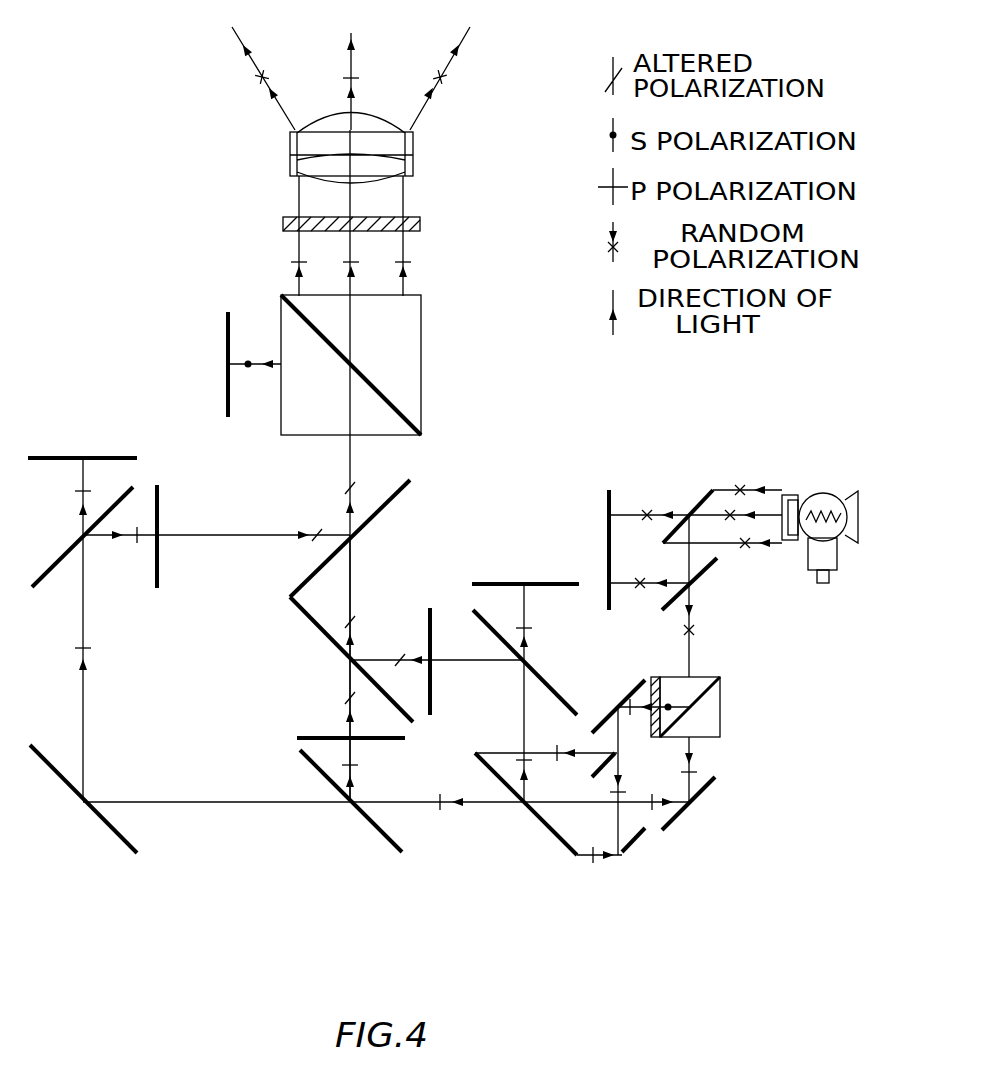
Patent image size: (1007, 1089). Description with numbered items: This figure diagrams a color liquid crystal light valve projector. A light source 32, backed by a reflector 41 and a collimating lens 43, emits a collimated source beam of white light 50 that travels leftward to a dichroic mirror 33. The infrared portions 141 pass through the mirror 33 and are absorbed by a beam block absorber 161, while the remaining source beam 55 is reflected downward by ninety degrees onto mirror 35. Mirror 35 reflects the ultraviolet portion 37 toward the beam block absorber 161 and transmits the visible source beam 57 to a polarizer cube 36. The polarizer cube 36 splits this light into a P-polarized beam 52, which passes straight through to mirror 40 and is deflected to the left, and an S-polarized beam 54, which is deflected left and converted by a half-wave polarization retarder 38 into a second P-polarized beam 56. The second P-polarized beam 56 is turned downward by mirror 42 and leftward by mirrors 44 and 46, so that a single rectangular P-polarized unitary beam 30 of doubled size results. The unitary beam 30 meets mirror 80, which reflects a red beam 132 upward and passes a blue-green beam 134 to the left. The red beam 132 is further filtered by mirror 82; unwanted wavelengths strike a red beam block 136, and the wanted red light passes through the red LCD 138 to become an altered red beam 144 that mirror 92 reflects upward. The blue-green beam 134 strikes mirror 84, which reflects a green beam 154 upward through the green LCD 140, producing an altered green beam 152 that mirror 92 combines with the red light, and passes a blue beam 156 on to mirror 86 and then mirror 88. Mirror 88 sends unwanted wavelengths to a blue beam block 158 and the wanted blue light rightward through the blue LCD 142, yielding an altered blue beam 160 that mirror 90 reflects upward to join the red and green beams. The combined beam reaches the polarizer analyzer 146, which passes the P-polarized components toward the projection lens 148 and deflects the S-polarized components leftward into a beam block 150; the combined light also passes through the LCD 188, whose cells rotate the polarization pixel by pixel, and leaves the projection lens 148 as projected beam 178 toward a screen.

The unitary polarized beam 30 is at (560, 730).
The light source 32 is at (830, 493).
The mirror 33 is at (697, 502).
The mirror 35 is at (700, 578).
The polarizer cube 36 is at (720, 707).
The ultraviolet portion of the source beam 37 is at (623, 583).
The half-wave polarization retarder 38 is at (656, 677).
The mirror 40 is at (700, 795).
The reflector 41 is at (868, 495).
The mirror 42 is at (625, 705).
The collimating lens 43 is at (808, 479).
The mirror 44 is at (633, 845).
The mirror 46 is at (596, 778).
The source beam of white light 50 is at (775, 490).
The P-polarized beam 52 is at (693, 748).
The S-polarized beam 54 is at (680, 706).
The source beam 55 is at (690, 548).
The second P-polarized beam 56 is at (638, 781).
The source beam 57 is at (690, 653).
The mirror 80 is at (545, 825).
The mirror 82 is at (535, 665).
The mirror 84 is at (385, 835).
The mirror 86 is at (105, 828).
The mirror 88 is at (50, 565).
The mirror 90 is at (393, 500).
The mirror 92 is at (290, 606).
The red beam 132 is at (523, 727).
The blue-green beam 134 is at (430, 805).
The red beam block 136 is at (545, 584).
The red LCD 138 is at (430, 606).
The green LCD 140 is at (305, 735).
The infrared portions of the source beam 141 is at (626, 517).
The blue LCD 142 is at (160, 572).
The altered red beam 144 is at (350, 453).
The polarizer analyzer 146 is at (422, 333).
The projection lens 148 is at (412, 147).
The beam block 150 is at (228, 384).
The altered green beam 152 is at (352, 567).
The green beam 154 is at (352, 752).
The blue beam 156 is at (203, 805).
The blue beam block 158 is at (62, 457).
The altered blue beam 160 is at (215, 535).
The beam block absorber 161 is at (610, 532).
The projected beam 178 is at (417, 108).
The LCD 188 is at (420, 227).